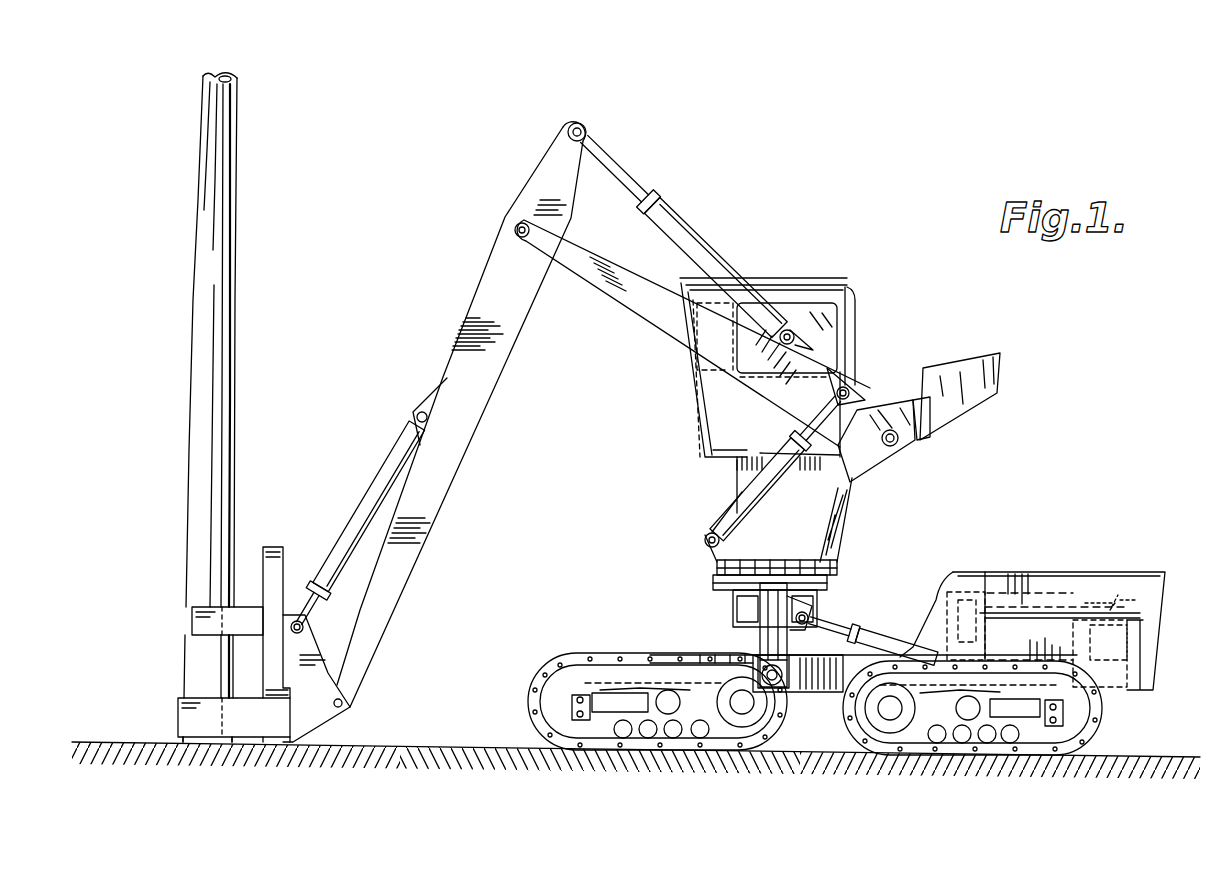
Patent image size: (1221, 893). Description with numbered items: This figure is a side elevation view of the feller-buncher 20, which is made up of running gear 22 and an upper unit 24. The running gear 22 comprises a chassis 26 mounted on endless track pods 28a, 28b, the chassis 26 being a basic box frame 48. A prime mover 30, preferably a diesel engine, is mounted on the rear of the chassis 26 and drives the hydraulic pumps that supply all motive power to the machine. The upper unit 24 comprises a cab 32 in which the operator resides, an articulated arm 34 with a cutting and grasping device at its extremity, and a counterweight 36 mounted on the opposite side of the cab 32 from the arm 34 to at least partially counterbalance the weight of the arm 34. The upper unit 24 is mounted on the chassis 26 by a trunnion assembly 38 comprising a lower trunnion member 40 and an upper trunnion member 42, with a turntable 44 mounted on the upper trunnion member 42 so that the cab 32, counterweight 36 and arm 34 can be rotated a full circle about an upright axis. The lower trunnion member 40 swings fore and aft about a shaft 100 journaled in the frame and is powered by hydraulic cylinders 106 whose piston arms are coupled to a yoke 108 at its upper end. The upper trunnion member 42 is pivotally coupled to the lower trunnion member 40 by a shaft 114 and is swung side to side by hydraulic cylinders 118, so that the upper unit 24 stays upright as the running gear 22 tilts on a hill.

The feller-buncher 20 is at (864, 263).
The running gear 22 is at (985, 556).
The upper unit 24 is at (878, 317).
The chassis 26 is at (785, 690).
The endless track pod 28a is at (610, 653).
The endless track pod 28b is at (1105, 718).
The prime mover 30 is at (1072, 568).
The cab 32 is at (790, 277).
The articulated arm 34 is at (455, 331).
The counterweight 36 is at (1003, 362).
The trunnion assembly 38 is at (850, 561).
The lower trunnion member 40 is at (733, 622).
The upper trunnion member 42 is at (733, 592).
The turntable 44 is at (717, 565).
The box frame 48 is at (832, 702).
The shaft 100 is at (777, 687).
The hydraulic cylinders 106 is at (897, 627).
The yoke 108 is at (810, 620).
The shaft 114 is at (817, 595).
The hydraulic cylinders 118 is at (766, 640).